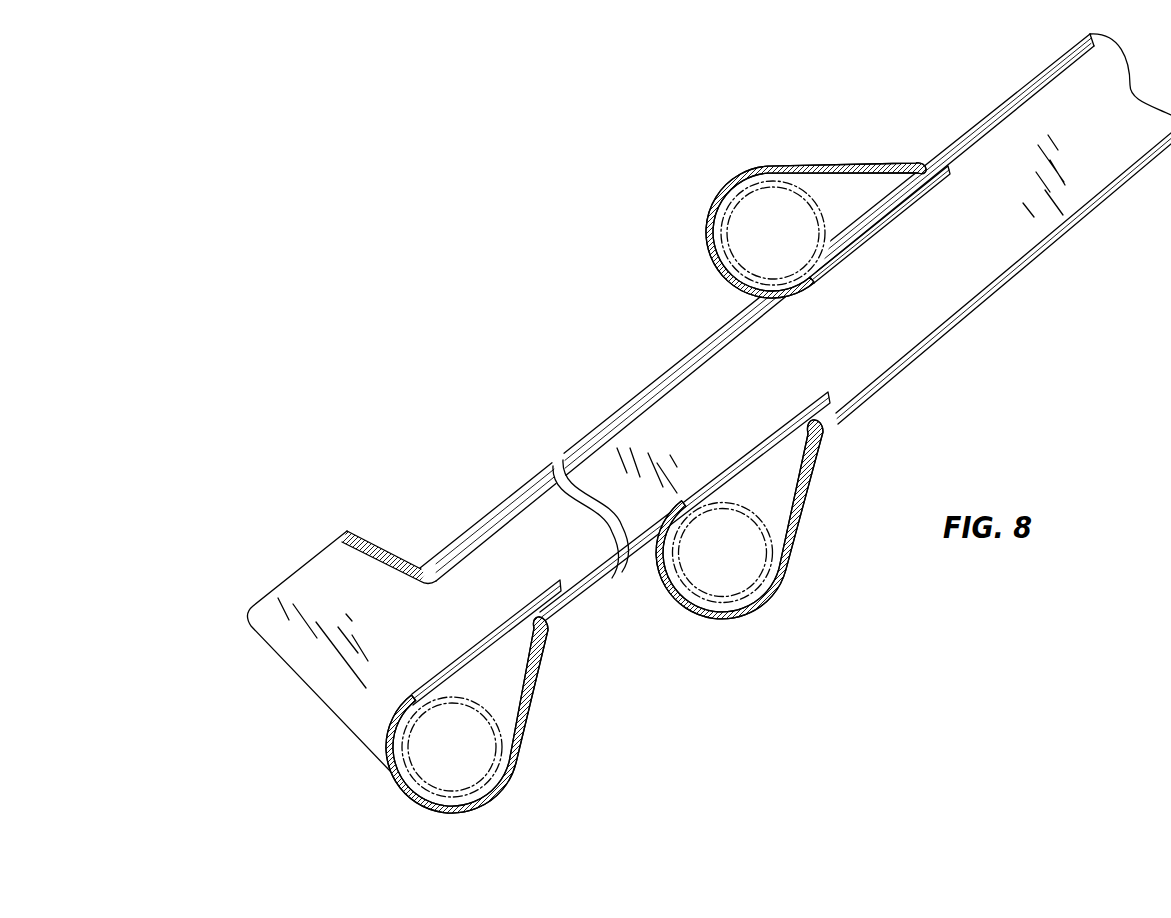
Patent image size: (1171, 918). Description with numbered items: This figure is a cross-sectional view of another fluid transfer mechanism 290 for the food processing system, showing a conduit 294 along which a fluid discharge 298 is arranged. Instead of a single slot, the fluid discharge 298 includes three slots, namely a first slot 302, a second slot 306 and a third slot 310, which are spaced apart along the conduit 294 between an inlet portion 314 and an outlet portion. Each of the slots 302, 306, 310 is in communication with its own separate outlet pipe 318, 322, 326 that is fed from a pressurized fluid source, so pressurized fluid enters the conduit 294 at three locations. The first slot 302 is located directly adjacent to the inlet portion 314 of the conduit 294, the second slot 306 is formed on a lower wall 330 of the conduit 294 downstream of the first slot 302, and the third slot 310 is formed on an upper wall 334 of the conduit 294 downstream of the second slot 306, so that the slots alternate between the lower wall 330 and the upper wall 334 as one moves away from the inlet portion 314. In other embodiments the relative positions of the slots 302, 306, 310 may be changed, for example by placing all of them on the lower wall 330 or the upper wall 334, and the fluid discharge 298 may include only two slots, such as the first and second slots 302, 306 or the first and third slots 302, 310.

The fluid transfer mechanism 290 is at (553, 94).
The conduit 294 is at (653, 405).
The fluid discharge 298 is at (676, 682).
The first slot 302 is at (555, 635).
The second slot 306 is at (826, 440).
The third slot 310 is at (907, 170).
The inlet portion 314 is at (280, 636).
The outlet pipe 318 is at (437, 806).
The outlet pipe 322 is at (733, 626).
The outlet pipe 326 is at (727, 191).
The lower wall 330 is at (940, 330).
The upper wall 334 is at (1000, 107).